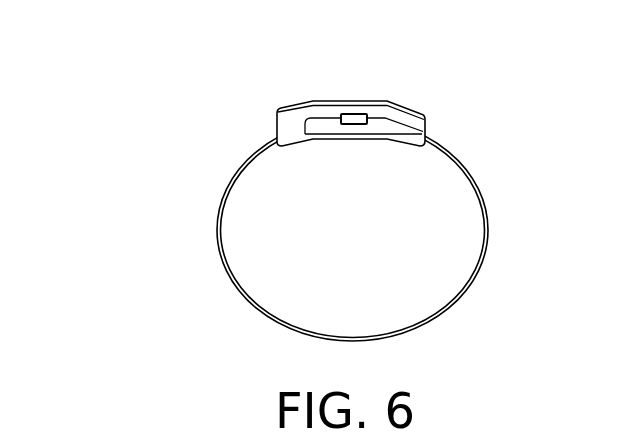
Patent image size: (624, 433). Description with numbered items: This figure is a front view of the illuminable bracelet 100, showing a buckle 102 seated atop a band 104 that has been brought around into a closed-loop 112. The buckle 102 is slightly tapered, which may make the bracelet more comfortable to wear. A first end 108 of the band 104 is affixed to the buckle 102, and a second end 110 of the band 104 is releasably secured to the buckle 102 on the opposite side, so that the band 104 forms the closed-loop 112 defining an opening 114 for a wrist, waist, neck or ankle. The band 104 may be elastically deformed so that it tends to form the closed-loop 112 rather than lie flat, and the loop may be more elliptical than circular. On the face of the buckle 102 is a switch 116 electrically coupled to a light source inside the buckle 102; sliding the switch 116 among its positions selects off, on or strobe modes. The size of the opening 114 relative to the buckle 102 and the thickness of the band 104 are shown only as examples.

The illuminable bracelet 100 is at (100, 50).
The buckle 102 is at (348, 101).
The band 104 is at (232, 282).
The first end 108 is at (435, 133).
The second end 110 is at (258, 143).
The closed-loop 112 is at (474, 282).
The opening 114 is at (377, 240).
The switch 116 is at (353, 124).